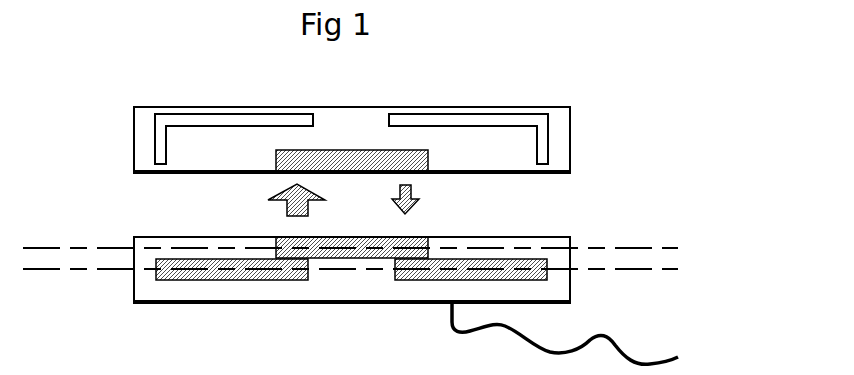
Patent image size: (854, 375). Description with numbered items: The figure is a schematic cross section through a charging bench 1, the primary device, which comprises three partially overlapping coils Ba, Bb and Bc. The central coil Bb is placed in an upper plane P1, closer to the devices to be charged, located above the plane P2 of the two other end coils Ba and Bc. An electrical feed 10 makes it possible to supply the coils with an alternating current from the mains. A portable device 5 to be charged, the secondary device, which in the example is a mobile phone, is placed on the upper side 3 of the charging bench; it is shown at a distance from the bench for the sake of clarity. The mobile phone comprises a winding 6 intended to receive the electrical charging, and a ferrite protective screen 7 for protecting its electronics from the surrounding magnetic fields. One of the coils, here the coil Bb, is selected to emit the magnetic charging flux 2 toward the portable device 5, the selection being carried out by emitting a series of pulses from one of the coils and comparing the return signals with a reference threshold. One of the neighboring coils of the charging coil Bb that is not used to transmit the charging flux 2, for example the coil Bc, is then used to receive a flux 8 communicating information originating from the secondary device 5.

The charging bench 1 is at (346, 266).
The magnetic charging flux 2 is at (297, 206).
The upper side 3 is at (488, 237).
The portable device 5 is at (148, 84).
The winding 6 is at (348, 153).
The ferrite protective screen 7 is at (160, 145).
The flux communicating information 8 is at (408, 206).
The electrical feed 10 is at (620, 340).
The end coil Ba is at (173, 273).
The central coil Bb is at (348, 254).
The end coil Bc is at (528, 282).
The upper plane P1 is at (623, 247).
The lower plane P2 is at (667, 268).